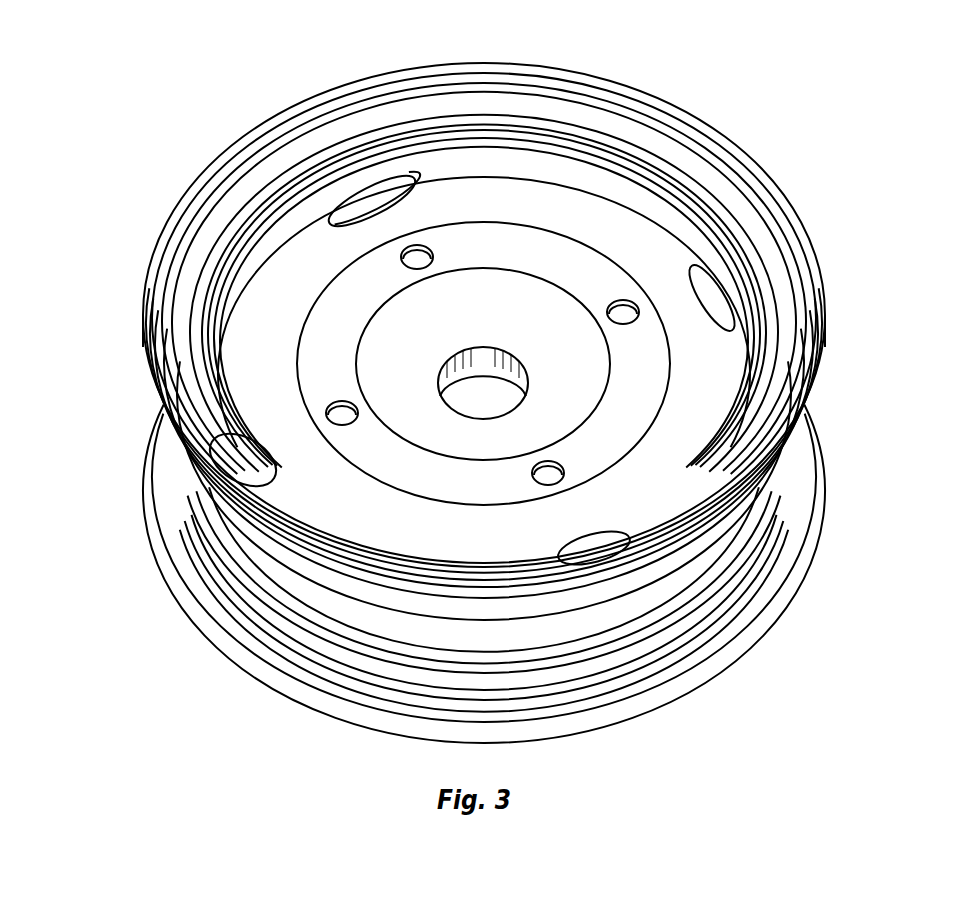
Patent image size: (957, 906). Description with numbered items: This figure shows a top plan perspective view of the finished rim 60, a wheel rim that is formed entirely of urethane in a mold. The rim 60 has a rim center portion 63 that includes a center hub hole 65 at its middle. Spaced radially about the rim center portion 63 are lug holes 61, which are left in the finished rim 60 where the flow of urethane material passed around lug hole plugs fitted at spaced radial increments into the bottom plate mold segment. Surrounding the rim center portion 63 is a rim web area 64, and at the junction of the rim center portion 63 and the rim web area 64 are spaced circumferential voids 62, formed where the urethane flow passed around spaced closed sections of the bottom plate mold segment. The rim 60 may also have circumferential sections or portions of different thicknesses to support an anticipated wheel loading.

The rim 60 is at (766, 117).
The lug holes 61 is at (556, 476).
The circumferential voids 62 is at (603, 550).
The rim center portion 63 is at (722, 386).
The rim web area 64 is at (300, 582).
The center hub hole 65 is at (455, 364).